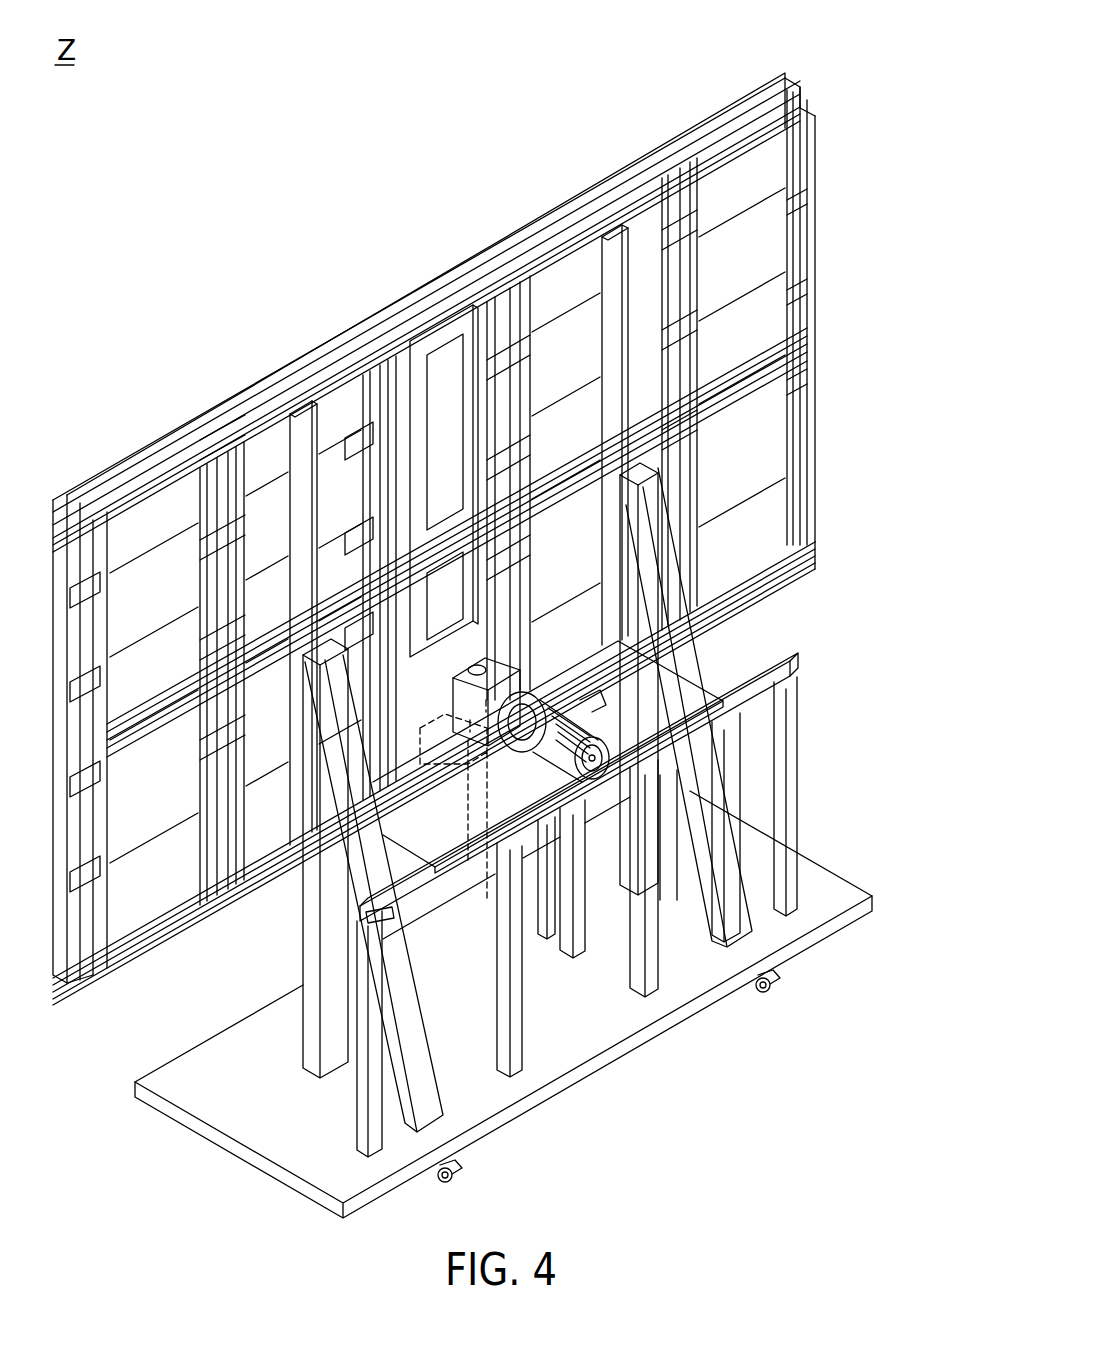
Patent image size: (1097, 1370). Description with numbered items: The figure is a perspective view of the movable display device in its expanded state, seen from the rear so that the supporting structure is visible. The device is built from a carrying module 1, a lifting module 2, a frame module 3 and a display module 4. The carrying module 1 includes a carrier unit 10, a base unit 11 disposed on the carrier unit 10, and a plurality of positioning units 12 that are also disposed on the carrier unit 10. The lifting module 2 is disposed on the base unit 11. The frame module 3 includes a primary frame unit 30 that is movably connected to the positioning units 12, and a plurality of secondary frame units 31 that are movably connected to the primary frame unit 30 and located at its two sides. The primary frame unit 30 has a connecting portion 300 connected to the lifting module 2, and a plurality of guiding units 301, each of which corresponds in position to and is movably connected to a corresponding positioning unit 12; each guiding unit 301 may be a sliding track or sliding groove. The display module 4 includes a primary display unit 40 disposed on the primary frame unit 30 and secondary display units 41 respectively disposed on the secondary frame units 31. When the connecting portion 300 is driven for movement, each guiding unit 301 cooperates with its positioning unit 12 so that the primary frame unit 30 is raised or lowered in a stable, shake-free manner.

The carrying module 1 is at (940, 548).
The carrier unit 10 is at (857, 898).
The base unit 11 is at (694, 734).
The positioning unit 12 is at (655, 517).
The lifting module 2 is at (598, 718).
The frame module 3 is at (700, 75).
The primary frame unit 30 is at (624, 209).
The secondary frame unit 31 is at (708, 160).
The connecting portion 300 is at (466, 768).
The guiding unit 301 is at (601, 276).
The display module 4 is at (240, 320).
The primary display unit 40 is at (238, 400).
The secondary display unit 41 is at (752, 97).